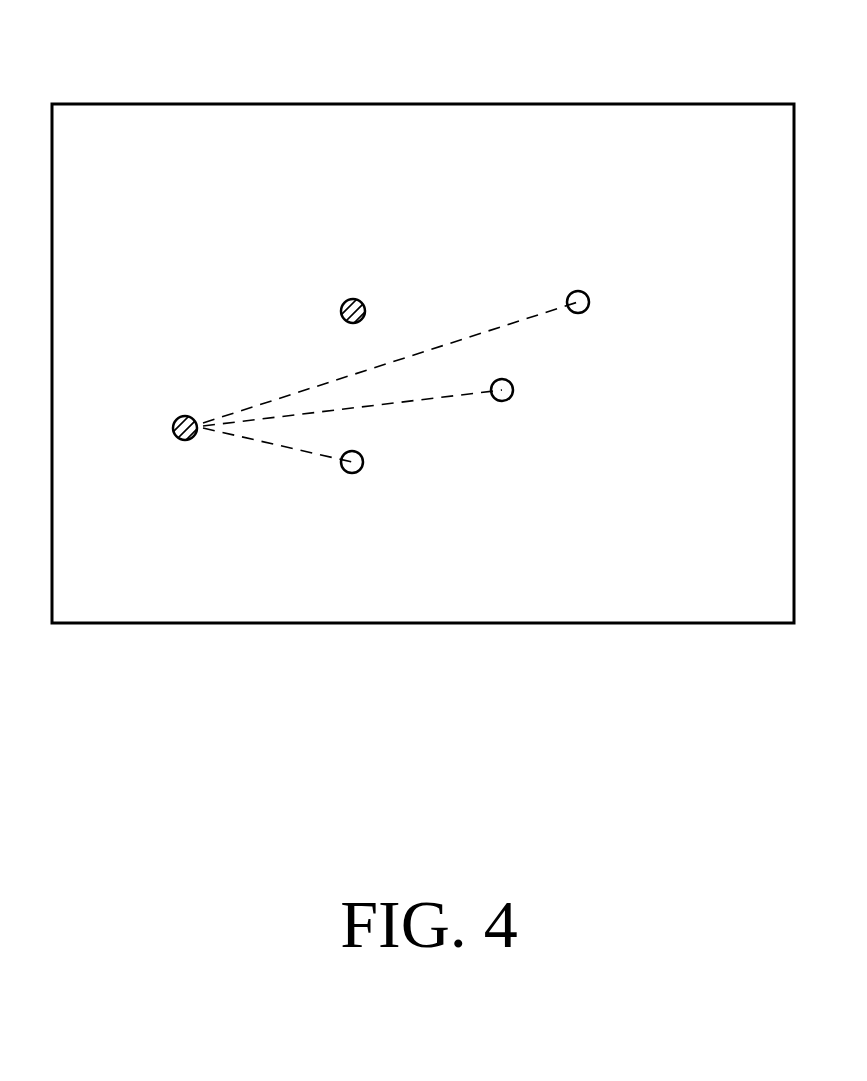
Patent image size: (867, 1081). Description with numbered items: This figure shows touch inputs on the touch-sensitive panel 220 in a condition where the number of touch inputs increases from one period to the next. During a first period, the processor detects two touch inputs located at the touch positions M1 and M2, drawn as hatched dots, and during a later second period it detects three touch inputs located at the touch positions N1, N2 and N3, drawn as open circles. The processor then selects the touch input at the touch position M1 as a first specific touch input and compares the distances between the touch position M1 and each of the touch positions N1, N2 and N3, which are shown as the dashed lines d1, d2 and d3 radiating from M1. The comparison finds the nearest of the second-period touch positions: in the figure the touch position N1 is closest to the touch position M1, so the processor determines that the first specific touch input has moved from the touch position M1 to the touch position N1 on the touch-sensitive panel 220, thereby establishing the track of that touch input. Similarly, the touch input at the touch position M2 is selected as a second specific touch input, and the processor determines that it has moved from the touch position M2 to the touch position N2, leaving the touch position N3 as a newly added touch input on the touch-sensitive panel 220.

The touch-sensitive panel 220 is at (421, 103).
The touch position M1 is at (189, 416).
The touch position M2 is at (352, 300).
The touch position N1 is at (387, 476).
The touch position N2 is at (537, 391).
The touch position N3 is at (609, 303).
The distance d1 is at (277, 462).
The distance d2 is at (352, 392).
The distance d3 is at (390, 361).